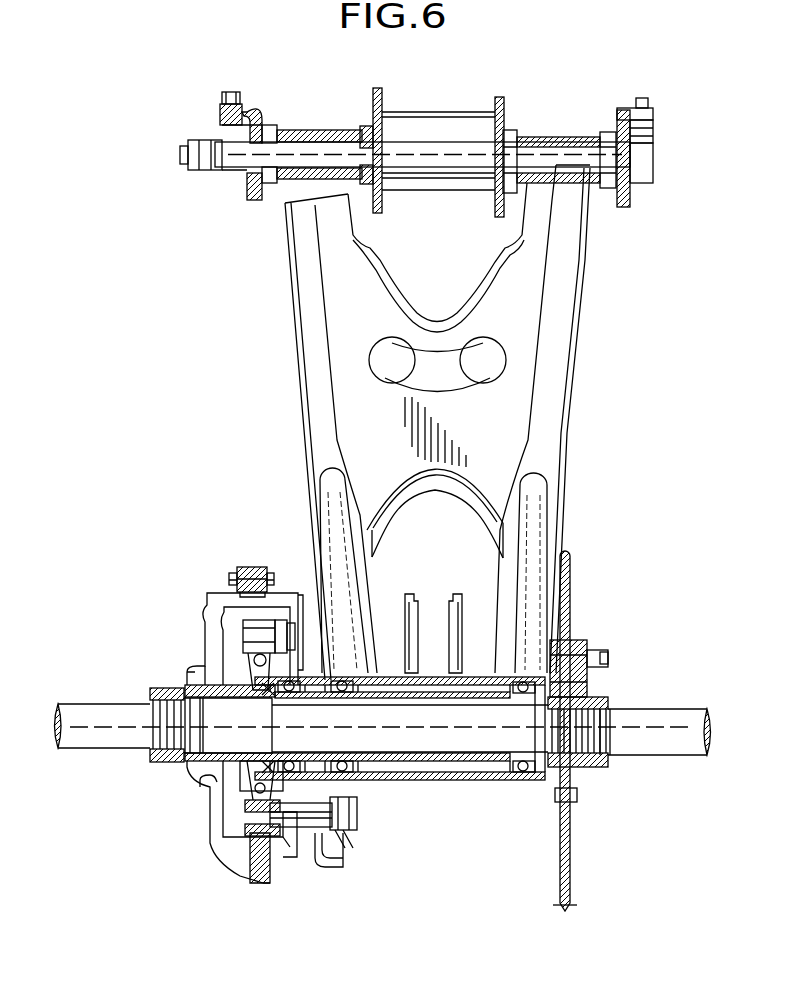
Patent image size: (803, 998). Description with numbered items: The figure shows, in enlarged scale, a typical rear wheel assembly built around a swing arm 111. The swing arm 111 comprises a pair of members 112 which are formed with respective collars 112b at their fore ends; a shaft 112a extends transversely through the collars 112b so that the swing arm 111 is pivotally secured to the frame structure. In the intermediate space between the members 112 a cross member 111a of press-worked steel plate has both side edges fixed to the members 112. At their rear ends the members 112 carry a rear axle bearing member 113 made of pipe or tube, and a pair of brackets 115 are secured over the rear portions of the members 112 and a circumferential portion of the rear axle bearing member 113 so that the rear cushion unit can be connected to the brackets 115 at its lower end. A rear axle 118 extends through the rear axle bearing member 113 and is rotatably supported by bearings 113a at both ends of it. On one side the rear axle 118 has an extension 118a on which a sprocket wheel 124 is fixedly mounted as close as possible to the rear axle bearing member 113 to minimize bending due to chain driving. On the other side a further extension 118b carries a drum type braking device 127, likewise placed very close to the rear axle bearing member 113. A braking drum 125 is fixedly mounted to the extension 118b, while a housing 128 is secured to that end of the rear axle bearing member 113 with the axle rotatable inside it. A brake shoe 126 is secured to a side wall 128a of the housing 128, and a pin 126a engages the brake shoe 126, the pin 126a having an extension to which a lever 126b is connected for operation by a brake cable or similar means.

The swing arm 111 is at (552, 416).
The cross member 111a is at (520, 297).
The members 112 is at (305, 363).
The shaft 112a is at (413, 162).
The collars 112b is at (298, 127).
The rear axle bearing member 113 is at (417, 775).
The bearings 113a is at (337, 703).
The brackets 115 is at (398, 610).
The rear axle 118 is at (659, 702).
The extension 118a is at (618, 750).
The extension 118b is at (183, 760).
The sprocket wheel 124 is at (570, 855).
The braking drum 125 is at (213, 618).
The brake shoe 126 is at (213, 842).
The pin 126a is at (263, 823).
The lever 126b is at (353, 843).
The braking device 127 is at (238, 552).
The housing 128 is at (213, 590).
The side wall 128a is at (290, 590).